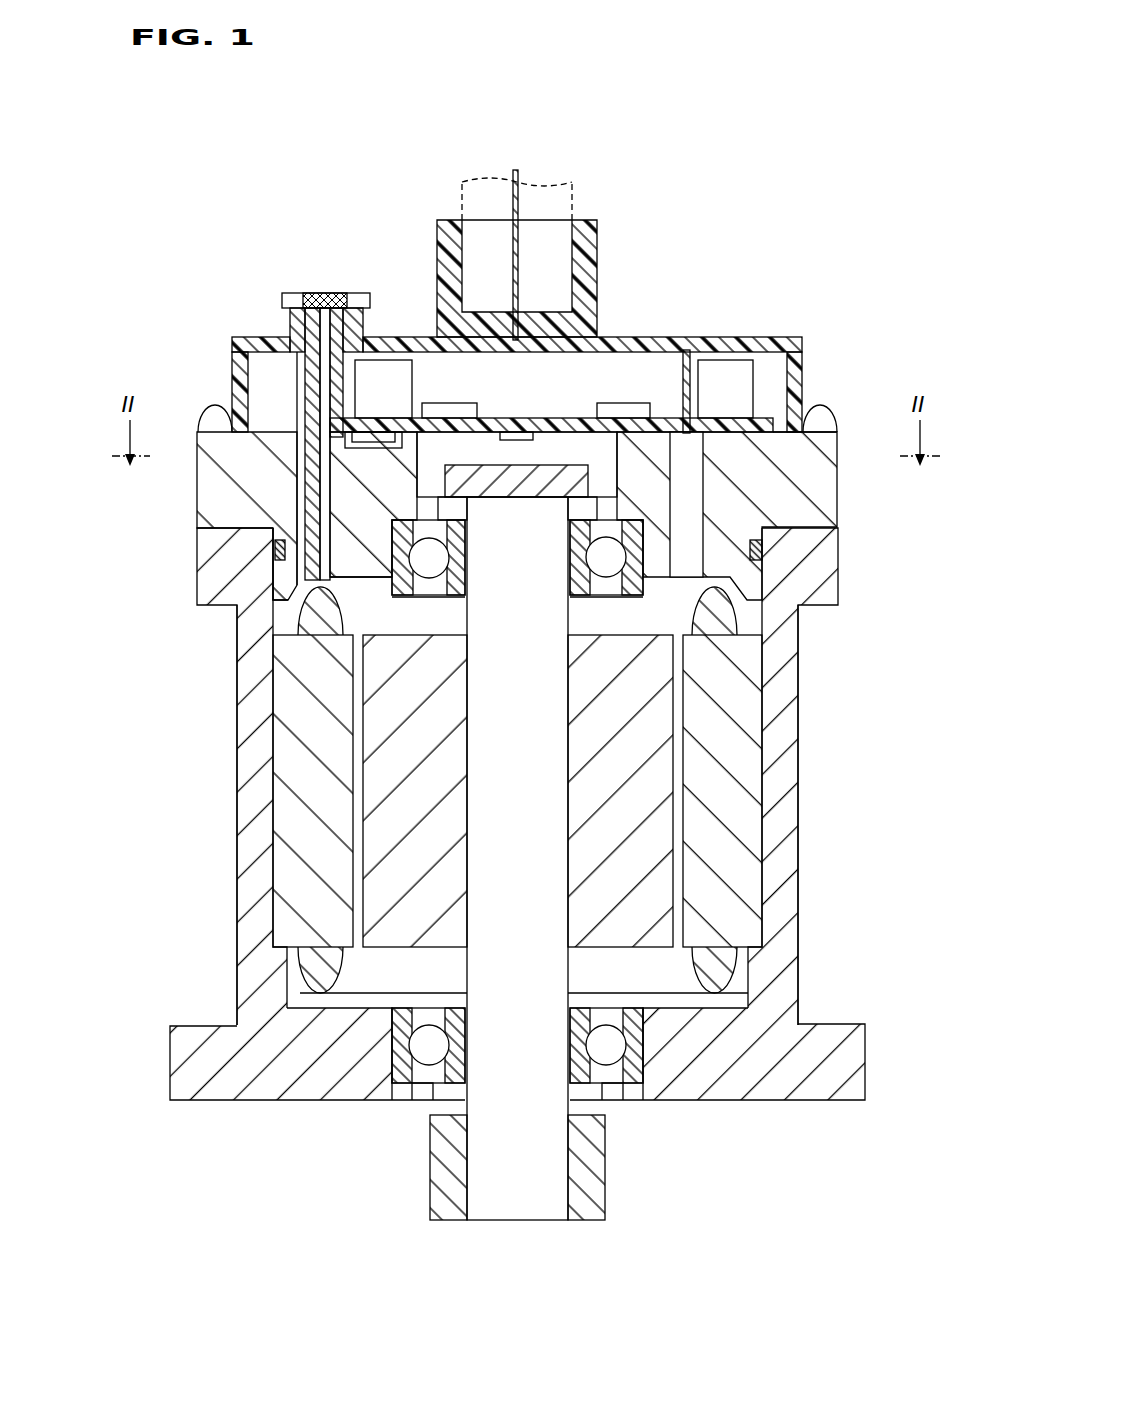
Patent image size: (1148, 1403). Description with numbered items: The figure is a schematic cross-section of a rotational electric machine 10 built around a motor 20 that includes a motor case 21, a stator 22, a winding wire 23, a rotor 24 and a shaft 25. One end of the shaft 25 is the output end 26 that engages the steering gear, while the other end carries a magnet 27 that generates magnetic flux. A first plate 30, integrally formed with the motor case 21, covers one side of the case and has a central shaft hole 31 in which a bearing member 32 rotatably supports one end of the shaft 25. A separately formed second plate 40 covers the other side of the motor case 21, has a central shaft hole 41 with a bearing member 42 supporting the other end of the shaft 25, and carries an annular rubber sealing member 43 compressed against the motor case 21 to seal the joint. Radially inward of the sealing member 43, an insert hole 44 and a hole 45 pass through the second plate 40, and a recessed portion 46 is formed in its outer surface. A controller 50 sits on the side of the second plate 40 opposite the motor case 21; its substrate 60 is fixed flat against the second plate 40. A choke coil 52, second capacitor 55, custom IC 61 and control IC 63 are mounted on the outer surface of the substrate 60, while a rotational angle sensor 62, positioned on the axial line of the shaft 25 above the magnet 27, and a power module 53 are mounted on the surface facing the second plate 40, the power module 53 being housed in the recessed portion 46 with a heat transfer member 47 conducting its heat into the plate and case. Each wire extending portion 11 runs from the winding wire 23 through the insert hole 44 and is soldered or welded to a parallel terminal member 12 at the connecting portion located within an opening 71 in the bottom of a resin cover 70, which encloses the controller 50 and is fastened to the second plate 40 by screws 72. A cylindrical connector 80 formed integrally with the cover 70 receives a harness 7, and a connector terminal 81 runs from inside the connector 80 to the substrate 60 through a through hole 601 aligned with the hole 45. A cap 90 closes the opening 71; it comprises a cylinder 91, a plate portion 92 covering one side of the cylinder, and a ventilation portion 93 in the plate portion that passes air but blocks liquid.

The rotational electric machine 10 is at (704, 106).
The harness 7 is at (572, 188).
The connector 80 is at (450, 220).
The connector terminal 81 is at (516, 170).
The controller 50 is at (603, 372).
The cap 90 is at (290, 293).
The ventilation portion 93 is at (323, 293).
The opening 71 is at (340, 308).
The plate portion 92 is at (350, 308).
The cylinder 91 is at (290, 326).
The wire extending portion 11 is at (305, 362).
The terminal member 12 is at (330, 383).
The second capacitor 55 is at (387, 362).
The recessed portion 46 is at (380, 432).
The heat transfer member 47 is at (395, 440).
The control IC 63 is at (455, 405).
The custom IC 61 is at (625, 405).
The rotational angle sensor 62 is at (516, 440).
The choke coil 52 is at (722, 362).
The substrate 60 is at (757, 418).
The through hole 601 is at (790, 447).
The cover 70 is at (815, 350).
The screw 72 is at (820, 412).
The second plate 40 is at (830, 485).
The insert hole 44 is at (330, 483).
The power module 53 is at (345, 515).
The hole 45 is at (675, 515).
The sealing member 43 is at (758, 548).
The shaft hole 41 is at (430, 562).
The bearing member 42 is at (402, 596).
The magnet 27 is at (558, 470).
The motor 20 is at (808, 733).
The motor case 21 is at (783, 767).
The stator 22 is at (750, 798).
The winding wire 23 is at (727, 960).
The rotor 24 is at (655, 860).
The shaft 25 is at (560, 890).
The shaft hole 31 is at (430, 1043).
The first plate 30 is at (305, 1092).
The bearing member 32 is at (420, 1088).
The output end 26 is at (600, 1195).